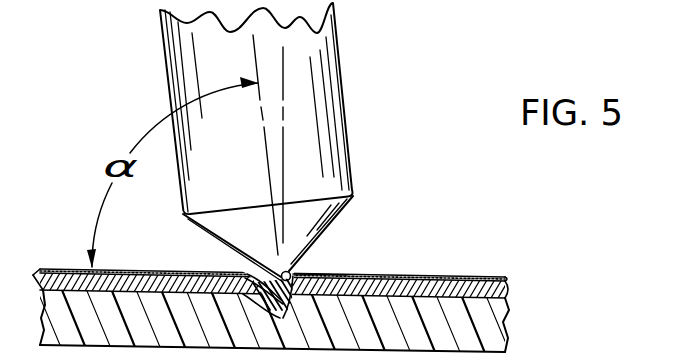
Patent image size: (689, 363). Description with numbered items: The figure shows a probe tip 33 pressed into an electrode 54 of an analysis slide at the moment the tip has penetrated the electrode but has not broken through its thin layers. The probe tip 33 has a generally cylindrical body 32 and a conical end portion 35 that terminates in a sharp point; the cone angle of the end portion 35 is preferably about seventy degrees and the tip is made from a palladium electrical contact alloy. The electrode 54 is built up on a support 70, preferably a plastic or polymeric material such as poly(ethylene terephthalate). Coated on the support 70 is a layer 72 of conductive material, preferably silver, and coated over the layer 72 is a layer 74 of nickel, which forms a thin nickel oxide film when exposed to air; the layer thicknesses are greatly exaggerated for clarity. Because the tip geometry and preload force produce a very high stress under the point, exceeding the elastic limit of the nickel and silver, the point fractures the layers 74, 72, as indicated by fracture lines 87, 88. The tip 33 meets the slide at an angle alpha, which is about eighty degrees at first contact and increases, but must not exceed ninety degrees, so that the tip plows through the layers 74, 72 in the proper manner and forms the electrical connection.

The cylindrical body 32 is at (347, 123).
The probe tip 33 is at (352, 81).
The conical end portion 35 is at (305, 266).
The electrode 54 is at (364, 142).
The support 70 is at (496, 329).
The layer of conductive material 72 is at (508, 293).
The layer of nickel 74 is at (493, 276).
The fracture line 87 is at (298, 271).
The fracture line 88 is at (347, 276).